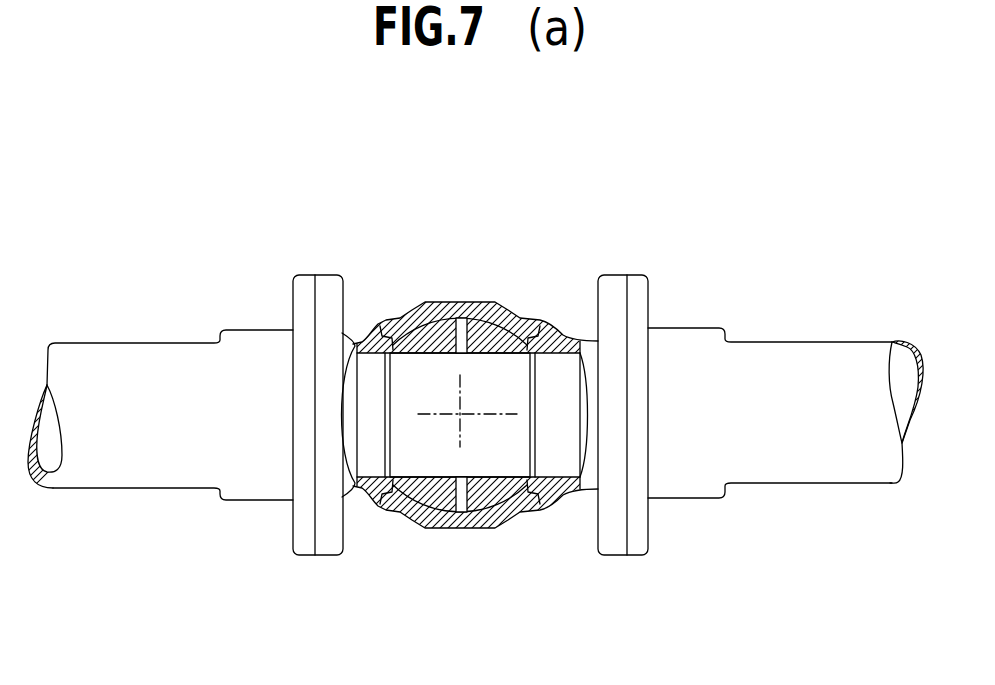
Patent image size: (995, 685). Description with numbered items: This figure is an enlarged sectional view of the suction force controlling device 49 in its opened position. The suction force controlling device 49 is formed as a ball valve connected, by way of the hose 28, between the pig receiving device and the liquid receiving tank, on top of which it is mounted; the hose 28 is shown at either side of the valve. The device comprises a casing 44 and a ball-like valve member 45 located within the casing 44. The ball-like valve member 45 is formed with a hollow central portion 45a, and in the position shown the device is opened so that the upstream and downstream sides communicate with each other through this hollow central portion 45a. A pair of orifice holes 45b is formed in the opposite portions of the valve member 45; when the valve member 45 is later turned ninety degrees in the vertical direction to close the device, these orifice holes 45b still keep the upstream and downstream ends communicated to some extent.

The hose 28 is at (103, 480).
The casing 44 is at (500, 312).
The ball-like valve member 45 is at (465, 424).
The hollow central portion 45a is at (433, 460).
The orifice holes 45b is at (467, 338).
The suction force controlling device 49 is at (477, 368).